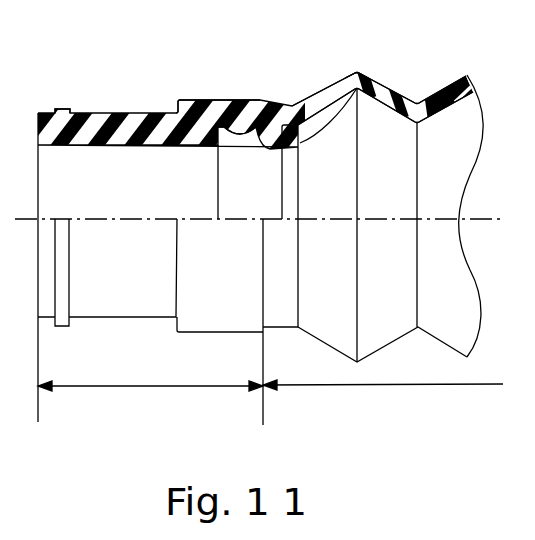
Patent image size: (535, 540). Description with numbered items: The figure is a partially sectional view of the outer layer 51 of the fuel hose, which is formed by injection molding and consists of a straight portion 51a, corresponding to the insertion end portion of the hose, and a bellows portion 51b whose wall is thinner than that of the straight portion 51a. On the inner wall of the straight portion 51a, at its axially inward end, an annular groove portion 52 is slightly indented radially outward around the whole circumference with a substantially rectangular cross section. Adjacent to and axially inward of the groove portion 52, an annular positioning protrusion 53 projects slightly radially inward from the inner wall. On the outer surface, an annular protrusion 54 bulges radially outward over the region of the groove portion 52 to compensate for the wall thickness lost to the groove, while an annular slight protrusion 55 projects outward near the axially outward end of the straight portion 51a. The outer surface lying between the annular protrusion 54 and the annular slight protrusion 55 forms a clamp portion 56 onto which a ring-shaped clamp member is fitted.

The outer layer 51 is at (325, 78).
The straight portion 51a is at (150, 405).
The bellows portion 51b is at (383, 402).
The annular groove portion 52 is at (263, 100).
The annular positioning protrusion 53 is at (358, 74).
The annular protrusion 54 is at (215, 100).
The annular slight protrusion 55 is at (62, 108).
The clamp portion 56 is at (92, 112).